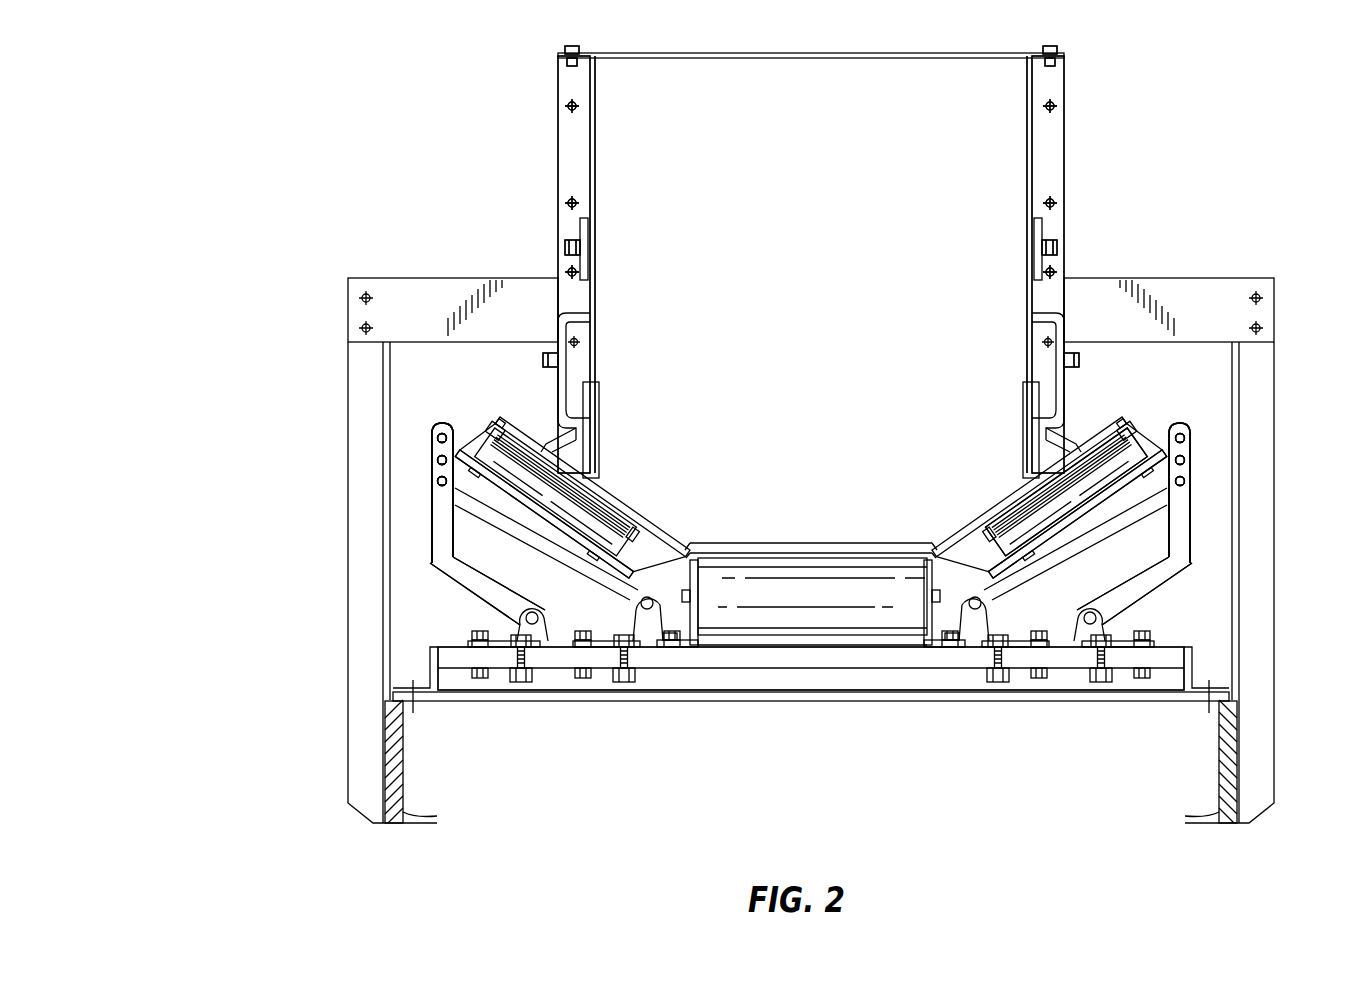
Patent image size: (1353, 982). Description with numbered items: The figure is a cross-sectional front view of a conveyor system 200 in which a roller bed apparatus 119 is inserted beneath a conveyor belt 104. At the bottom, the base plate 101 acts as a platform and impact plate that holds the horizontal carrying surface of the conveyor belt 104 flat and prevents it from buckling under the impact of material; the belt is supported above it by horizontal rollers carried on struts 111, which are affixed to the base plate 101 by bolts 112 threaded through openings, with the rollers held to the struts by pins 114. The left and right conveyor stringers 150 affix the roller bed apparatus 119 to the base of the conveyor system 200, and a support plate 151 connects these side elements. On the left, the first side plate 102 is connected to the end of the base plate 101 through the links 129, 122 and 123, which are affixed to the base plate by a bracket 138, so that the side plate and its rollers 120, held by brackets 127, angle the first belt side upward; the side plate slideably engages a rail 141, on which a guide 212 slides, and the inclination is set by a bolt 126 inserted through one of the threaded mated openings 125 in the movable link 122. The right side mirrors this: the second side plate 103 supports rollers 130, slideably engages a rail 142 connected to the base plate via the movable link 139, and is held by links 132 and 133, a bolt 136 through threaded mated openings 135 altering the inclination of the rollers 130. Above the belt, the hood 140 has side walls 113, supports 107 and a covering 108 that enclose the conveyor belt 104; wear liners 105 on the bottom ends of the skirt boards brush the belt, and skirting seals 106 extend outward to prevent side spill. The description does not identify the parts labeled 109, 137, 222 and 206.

The conveyor system 200 is at (232, 152).
The hood 140 is at (900, 40).
The covering 108 is at (722, 58).
The supports (skirt boards) 107 is at (560, 140).
The frame mounting plate 109 is at (412, 288).
The side walls 113 is at (597, 297).
The wear liners 105 is at (599, 420).
The skirting seals 106 is at (1085, 430).
The rollers 120 is at (585, 500).
The second side plate 103 is at (1105, 528).
The rollers 130 is at (1022, 522).
The brackets 127 is at (480, 428).
The idler end mounting block 137 is at (1145, 440).
The guide 212 is at (545, 532).
The idler mounting rail 222 is at (1010, 537).
The threaded mated openings 125 is at (430, 432).
The bolt 126 is at (430, 462).
The link 122 is at (430, 512).
The first side plate 102 is at (430, 528).
The threaded mated openings 135 is at (1196, 437).
The bolt 136 is at (1196, 460).
The link 132 is at (1200, 502).
The roller bed apparatus 119 is at (410, 490).
The link 123 is at (472, 585).
The link 133 is at (1160, 595).
The rail 141 is at (600, 570).
The rail 142 is at (1045, 570).
The bracket 138 is at (508, 628).
The link (movable attachment link member) 129 is at (622, 620).
The link (movable attachment link member) 139 is at (1030, 640).
The pins 114 is at (702, 542).
The conveyor belt 104 is at (870, 543).
The bolts 112 is at (680, 642).
The struts 111 is at (668, 642).
The mounting bolt 206 is at (540, 683).
The base plate 101 is at (790, 665).
The support plate 151 is at (858, 701).
The conveyor stringers 150 is at (405, 790).